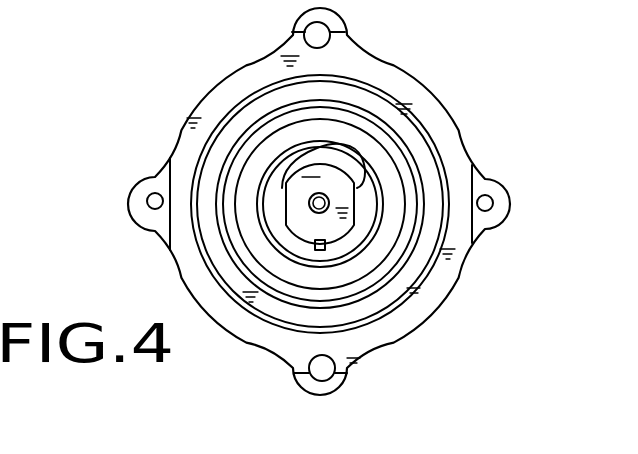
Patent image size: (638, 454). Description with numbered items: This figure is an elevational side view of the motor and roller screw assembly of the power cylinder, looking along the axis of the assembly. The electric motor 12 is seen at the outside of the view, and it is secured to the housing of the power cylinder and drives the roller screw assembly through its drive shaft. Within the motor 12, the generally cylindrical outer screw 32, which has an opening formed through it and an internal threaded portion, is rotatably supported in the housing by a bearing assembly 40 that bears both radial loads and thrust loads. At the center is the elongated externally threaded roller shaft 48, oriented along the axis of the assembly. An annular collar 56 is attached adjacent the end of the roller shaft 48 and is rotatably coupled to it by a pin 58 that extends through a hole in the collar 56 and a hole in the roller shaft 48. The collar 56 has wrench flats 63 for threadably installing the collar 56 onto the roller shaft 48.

The electric motor 12 is at (228, 88).
The bearing assembly 40 is at (400, 180).
The outer screw 32 is at (363, 220).
The annular collar 56 is at (330, 228).
The wrench flats 63 is at (362, 150).
The roller shaft 48 is at (310, 206).
The pin 58 is at (305, 243).